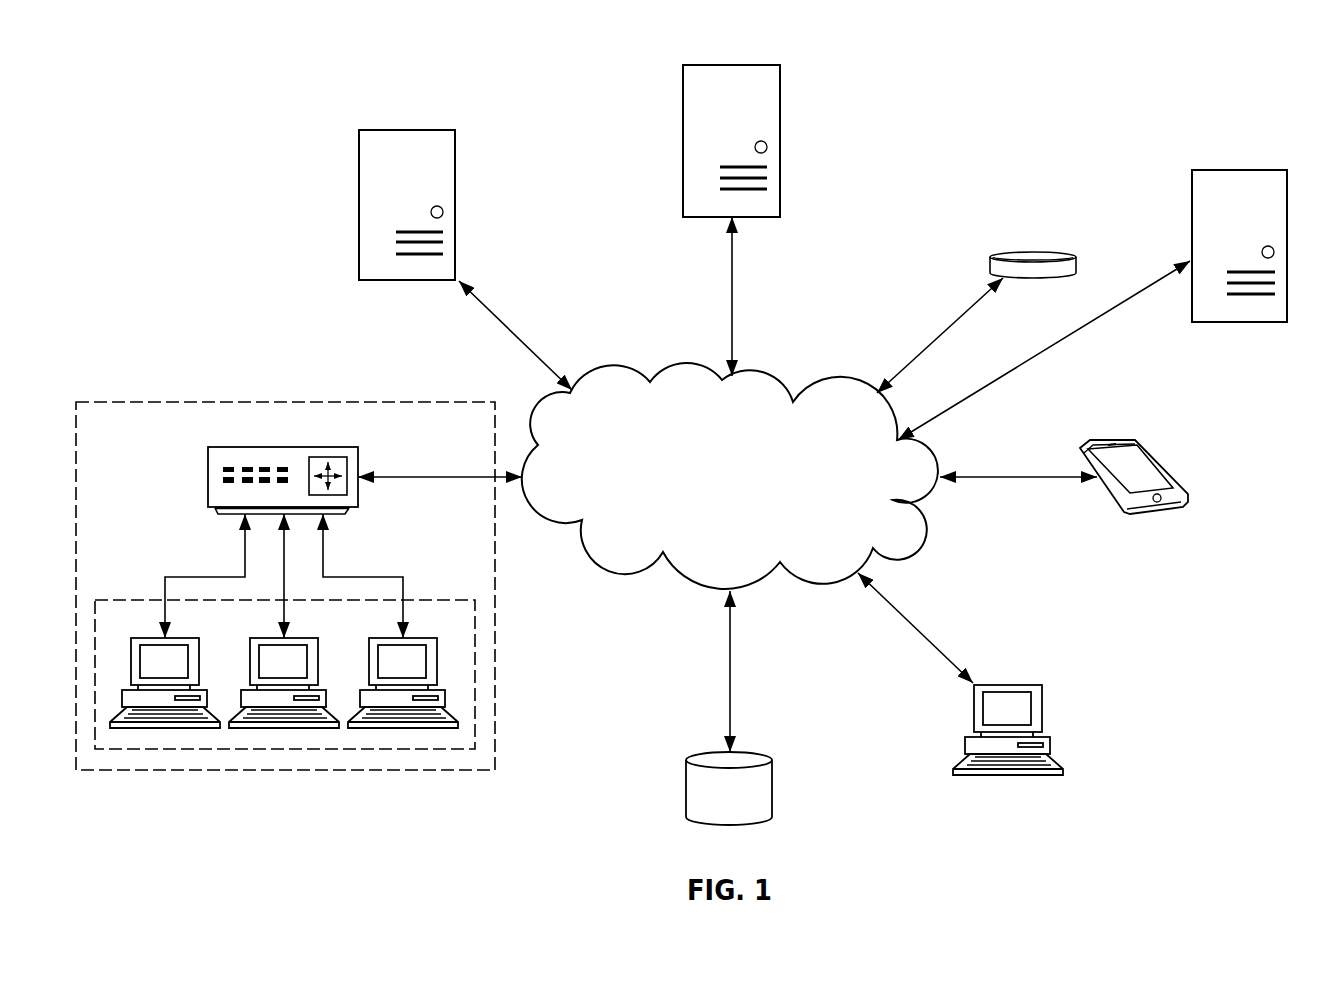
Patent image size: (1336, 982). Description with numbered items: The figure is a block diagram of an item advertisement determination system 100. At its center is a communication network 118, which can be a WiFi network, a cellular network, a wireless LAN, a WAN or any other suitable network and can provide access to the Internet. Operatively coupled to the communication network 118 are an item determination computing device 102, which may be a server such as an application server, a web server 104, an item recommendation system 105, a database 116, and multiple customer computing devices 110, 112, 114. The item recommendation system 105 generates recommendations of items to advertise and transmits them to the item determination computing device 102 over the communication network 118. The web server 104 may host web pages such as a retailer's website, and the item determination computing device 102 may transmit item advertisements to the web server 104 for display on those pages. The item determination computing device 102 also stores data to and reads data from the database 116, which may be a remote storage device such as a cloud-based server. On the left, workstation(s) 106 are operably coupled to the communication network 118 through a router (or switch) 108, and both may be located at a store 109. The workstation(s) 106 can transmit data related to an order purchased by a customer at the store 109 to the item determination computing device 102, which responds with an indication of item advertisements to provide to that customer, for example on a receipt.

The item advertisement determination system 100 is at (1120, 56).
The item determination computing device 102 is at (747, 65).
The web server 104 is at (380, 130).
The item recommendation system 105 is at (1255, 170).
The workstation(s) 106 is at (148, 598).
The router (or switch) 108 is at (233, 447).
The store 109 is at (148, 402).
The customer computing device 110 is at (1045, 252).
The customer computing device 112 is at (1157, 463).
The customer computing device 114 is at (1030, 685).
The database 116 is at (758, 752).
The communication network 118 is at (772, 368).